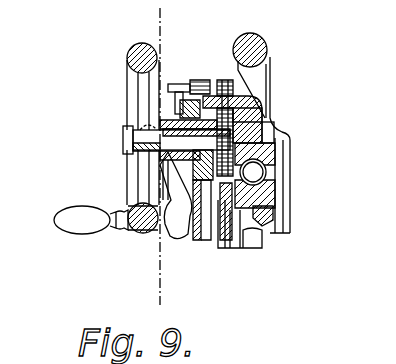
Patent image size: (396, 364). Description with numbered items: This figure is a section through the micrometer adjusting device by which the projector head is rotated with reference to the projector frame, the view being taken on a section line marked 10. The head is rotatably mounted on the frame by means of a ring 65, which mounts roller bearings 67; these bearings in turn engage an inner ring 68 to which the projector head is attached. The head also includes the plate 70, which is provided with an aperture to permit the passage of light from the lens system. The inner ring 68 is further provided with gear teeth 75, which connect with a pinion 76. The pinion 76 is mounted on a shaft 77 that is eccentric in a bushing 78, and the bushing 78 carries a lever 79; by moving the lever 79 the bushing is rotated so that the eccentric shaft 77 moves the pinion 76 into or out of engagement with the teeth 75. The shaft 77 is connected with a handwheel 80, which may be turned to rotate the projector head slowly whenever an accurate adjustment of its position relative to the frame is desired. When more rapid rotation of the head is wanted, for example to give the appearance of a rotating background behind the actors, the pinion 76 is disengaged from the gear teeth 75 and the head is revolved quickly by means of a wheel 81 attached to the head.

The section line 10 is at (158, 10).
The ring 65 is at (248, 122).
The roller bearings 67 is at (255, 172).
The inner ring 68 is at (268, 197).
The plate 70 is at (273, 221).
The gear teeth 75 is at (232, 207).
The pinion 76 is at (224, 108).
The shaft 77 is at (176, 130).
The bushing 78 is at (165, 216).
The lever 79 is at (183, 236).
The handwheel 80 is at (82, 212).
The wheel 81 is at (263, 47).